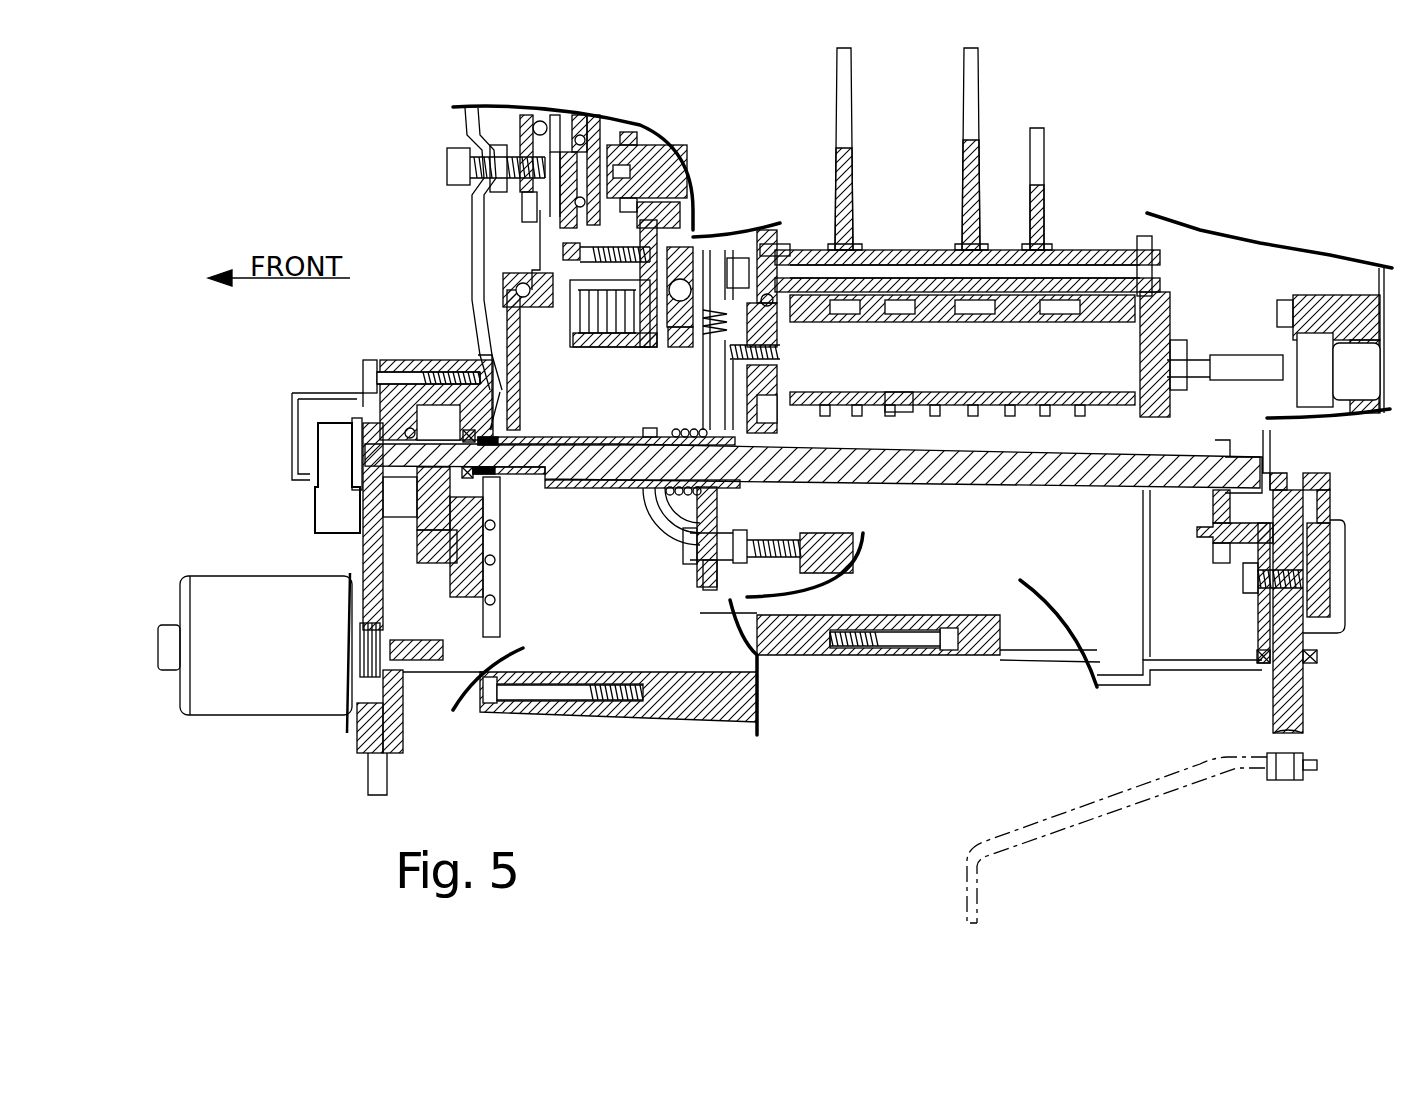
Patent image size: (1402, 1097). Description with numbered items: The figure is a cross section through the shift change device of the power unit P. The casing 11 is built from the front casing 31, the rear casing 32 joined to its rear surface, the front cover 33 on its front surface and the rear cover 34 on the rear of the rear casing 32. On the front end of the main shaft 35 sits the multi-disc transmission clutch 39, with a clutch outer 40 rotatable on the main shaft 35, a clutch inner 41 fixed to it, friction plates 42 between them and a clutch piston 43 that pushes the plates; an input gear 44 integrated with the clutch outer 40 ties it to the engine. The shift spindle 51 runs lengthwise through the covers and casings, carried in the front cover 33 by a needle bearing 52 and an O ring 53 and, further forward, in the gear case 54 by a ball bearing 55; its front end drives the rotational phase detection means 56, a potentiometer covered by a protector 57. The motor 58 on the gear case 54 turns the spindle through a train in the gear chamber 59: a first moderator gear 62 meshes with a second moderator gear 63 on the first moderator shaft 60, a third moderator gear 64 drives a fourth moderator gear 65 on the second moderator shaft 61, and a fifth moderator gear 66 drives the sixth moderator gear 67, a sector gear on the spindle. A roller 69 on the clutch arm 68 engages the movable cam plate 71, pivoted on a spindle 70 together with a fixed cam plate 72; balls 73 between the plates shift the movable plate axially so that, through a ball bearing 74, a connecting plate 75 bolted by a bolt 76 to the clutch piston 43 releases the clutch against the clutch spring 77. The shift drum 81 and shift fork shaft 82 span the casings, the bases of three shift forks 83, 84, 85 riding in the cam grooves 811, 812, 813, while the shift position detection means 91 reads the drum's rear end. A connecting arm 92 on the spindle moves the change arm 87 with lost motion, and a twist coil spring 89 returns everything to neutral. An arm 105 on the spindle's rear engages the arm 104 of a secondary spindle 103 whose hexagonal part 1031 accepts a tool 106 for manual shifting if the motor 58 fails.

The power unit P is at (385, 243).
The casing 11 is at (811, 655).
The front casing 31 is at (700, 700).
The rear casing 32 is at (1127, 677).
The front cover 33 is at (566, 705).
The rear cover 34 is at (1230, 660).
The main shaft 35 is at (650, 145).
The transmission clutch 39 is at (470, 235).
The clutch outer 40 is at (640, 342).
The clutch inner 41 is at (571, 333).
The friction plates 42 is at (610, 336).
The clutch piston 43 is at (645, 328).
The input gear 44 is at (683, 342).
The shift spindle 51 is at (958, 489).
The needle bearing 52 is at (505, 428).
The O ring 53 is at (485, 478).
The gear case 54 is at (363, 552).
The ball bearing 55 is at (413, 400).
The rotational phase detection means 56 is at (332, 433).
The protector 57 is at (290, 427).
The motor 58 is at (274, 661).
The gear chamber 59 is at (470, 693).
The first moderator shaft 60 is at (497, 617).
The second moderator shaft 61 is at (500, 547).
The first moderator gear 62 is at (443, 683).
The second moderator gear 63 is at (423, 583).
The third moderator gear 64 is at (503, 643).
The fourth moderator gear 65 is at (490, 510).
The fifth moderator gear 66 is at (430, 577).
The sixth moderator gear 67 is at (413, 498).
The clutch arm 68 is at (507, 318).
The roller 69 is at (532, 303).
The spindle 70 is at (447, 166).
The movable cam plate 71 is at (540, 262).
The fixed cam plate 72 is at (522, 120).
The balls 73 is at (541, 120).
The ball bearing 74 is at (573, 150).
The connecting plate 75 is at (594, 140).
The bolt 76 is at (563, 250).
The clutch spring 77 is at (690, 220).
The shift drum 81 is at (1078, 408).
The cam groove 811 is at (857, 412).
The cam groove 812 is at (973, 412).
The cam groove 813 is at (1045, 412).
The shift fork shaft 82 is at (1096, 262).
The shift fork 83 is at (852, 178).
The shift fork 84 is at (968, 200).
The shift fork 85 is at (1040, 192).
The change arm 87 is at (703, 590).
The twist coil spring 89 is at (688, 507).
The shift position detection means 91 is at (1320, 348).
The connecting arm 92 is at (643, 507).
The secondary spindle 103 is at (1305, 705).
The hexagonal part 1031 is at (1303, 782).
The arm 104 is at (1240, 545).
The arm 105 is at (1213, 550).
The tool 106 is at (1078, 812).